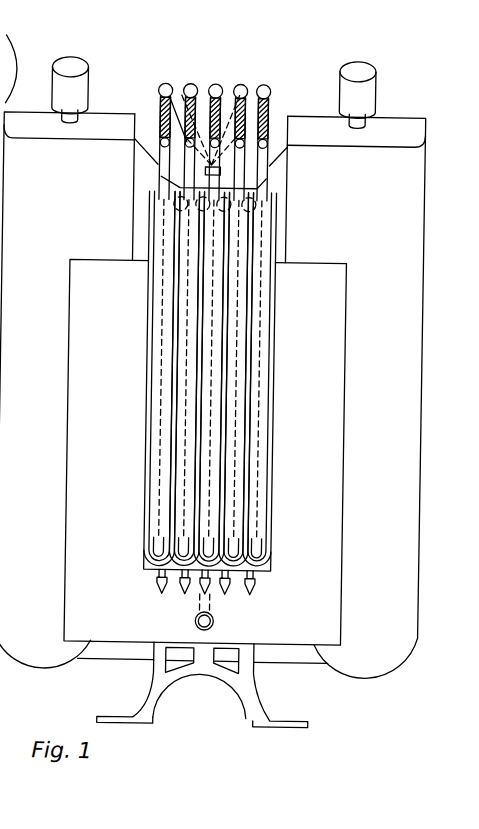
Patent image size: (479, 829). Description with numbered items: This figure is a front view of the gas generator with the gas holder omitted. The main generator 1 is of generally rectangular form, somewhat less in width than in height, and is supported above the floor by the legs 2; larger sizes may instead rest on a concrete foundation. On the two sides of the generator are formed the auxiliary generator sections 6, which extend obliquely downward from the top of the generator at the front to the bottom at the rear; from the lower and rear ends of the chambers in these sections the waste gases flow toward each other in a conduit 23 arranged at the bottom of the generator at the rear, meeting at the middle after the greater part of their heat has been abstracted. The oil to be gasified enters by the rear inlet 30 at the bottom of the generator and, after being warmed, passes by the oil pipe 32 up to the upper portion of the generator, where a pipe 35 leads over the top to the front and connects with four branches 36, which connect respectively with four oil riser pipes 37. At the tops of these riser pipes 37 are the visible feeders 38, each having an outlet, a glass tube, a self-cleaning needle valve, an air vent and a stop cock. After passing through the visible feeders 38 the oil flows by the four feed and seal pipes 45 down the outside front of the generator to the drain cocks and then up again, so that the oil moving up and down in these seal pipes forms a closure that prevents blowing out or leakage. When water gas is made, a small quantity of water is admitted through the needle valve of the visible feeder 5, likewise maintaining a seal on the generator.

The main generator 1 is at (342, 552).
The legs 2 is at (251, 697).
The visible feeder 5 is at (209, 452).
The auxiliary generator sections 6 is at (213, 303).
The conduit 23 is at (0, 114).
The rear inlet 30 is at (196, 621).
The oil pipe 32 is at (213, 602).
The pipe 35 is at (216, 172).
The branches 36 is at (172, 88).
The oil riser pipes 37 is at (152, 113).
The visible feeders 38 is at (268, 96).
The feed and seal pipes 45 is at (261, 325).